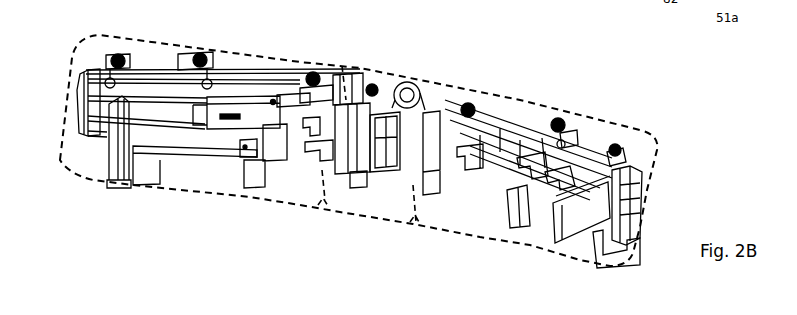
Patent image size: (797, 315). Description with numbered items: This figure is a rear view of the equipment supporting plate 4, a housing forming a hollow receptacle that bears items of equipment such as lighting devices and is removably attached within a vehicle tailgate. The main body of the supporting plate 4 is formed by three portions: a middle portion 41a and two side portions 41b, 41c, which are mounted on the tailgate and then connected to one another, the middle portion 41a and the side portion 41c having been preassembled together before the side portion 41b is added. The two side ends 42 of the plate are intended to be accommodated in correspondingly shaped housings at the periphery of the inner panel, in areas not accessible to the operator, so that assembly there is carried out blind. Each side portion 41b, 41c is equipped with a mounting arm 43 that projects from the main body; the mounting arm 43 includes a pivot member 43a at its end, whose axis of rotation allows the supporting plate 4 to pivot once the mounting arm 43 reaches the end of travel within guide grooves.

The equipment supporting plate 4 is at (401, 54).
The middle portion 41a is at (410, 80).
The side portion 41b is at (575, 127).
The side portion 41c is at (212, 55).
The side end 42 is at (80, 100).
The mounting arm 43 is at (121, 157).
The pivot member 43a is at (122, 110).